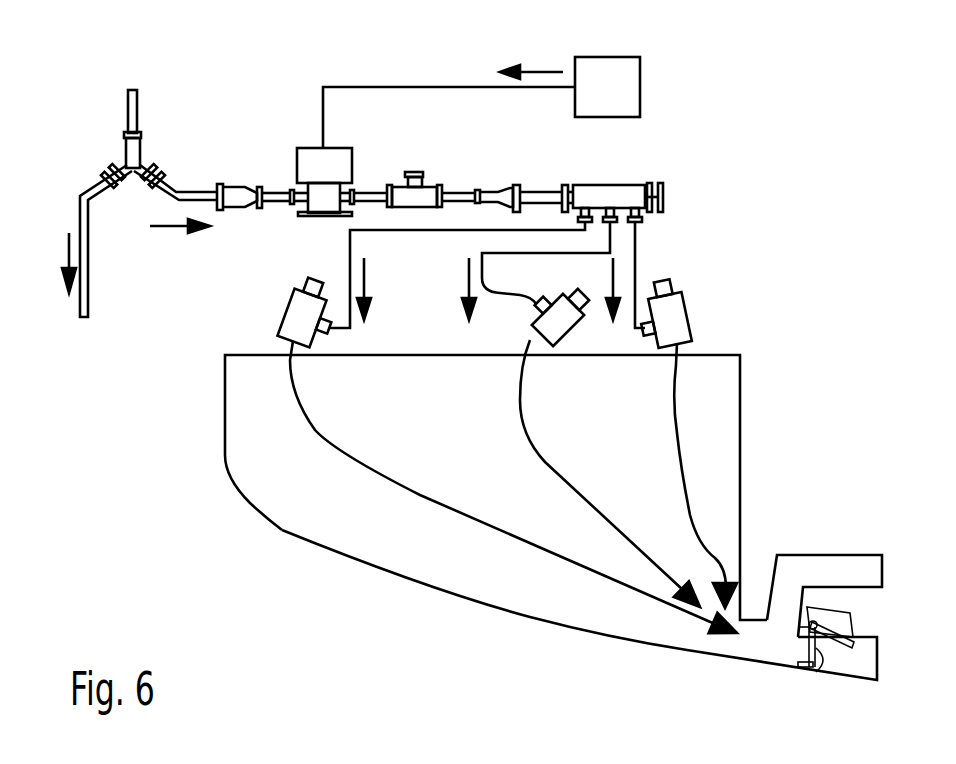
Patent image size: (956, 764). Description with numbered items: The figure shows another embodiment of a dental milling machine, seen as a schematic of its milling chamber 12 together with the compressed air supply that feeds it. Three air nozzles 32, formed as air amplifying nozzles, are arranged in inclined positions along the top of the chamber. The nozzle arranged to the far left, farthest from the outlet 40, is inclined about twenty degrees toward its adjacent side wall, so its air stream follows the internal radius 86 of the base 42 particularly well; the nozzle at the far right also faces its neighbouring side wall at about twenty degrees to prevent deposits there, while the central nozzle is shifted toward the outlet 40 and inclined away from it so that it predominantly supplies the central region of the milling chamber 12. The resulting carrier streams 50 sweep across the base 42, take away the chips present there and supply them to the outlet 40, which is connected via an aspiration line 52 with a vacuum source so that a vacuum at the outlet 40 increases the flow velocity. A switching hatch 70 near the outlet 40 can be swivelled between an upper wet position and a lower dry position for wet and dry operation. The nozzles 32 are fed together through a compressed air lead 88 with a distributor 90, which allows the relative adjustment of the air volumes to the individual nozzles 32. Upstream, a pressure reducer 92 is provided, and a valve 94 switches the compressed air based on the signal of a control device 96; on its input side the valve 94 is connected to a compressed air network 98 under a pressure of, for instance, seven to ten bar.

The milling chamber 12 is at (479, 470).
The air nozzle 32 is at (295, 316).
The outlet 40 is at (777, 652).
The base 42 is at (518, 613).
The carrier stream 50 is at (420, 497).
The aspiration line 52 is at (845, 565).
The switching hatch 70 is at (823, 670).
The internal radius 86 is at (282, 530).
The compressed air lead 88 is at (537, 197).
The distributor 90 is at (612, 195).
The pressure reducer 92 is at (413, 173).
The valve 94 is at (312, 160).
The control device 96 is at (604, 62).
The compressed air network 98 is at (137, 112).